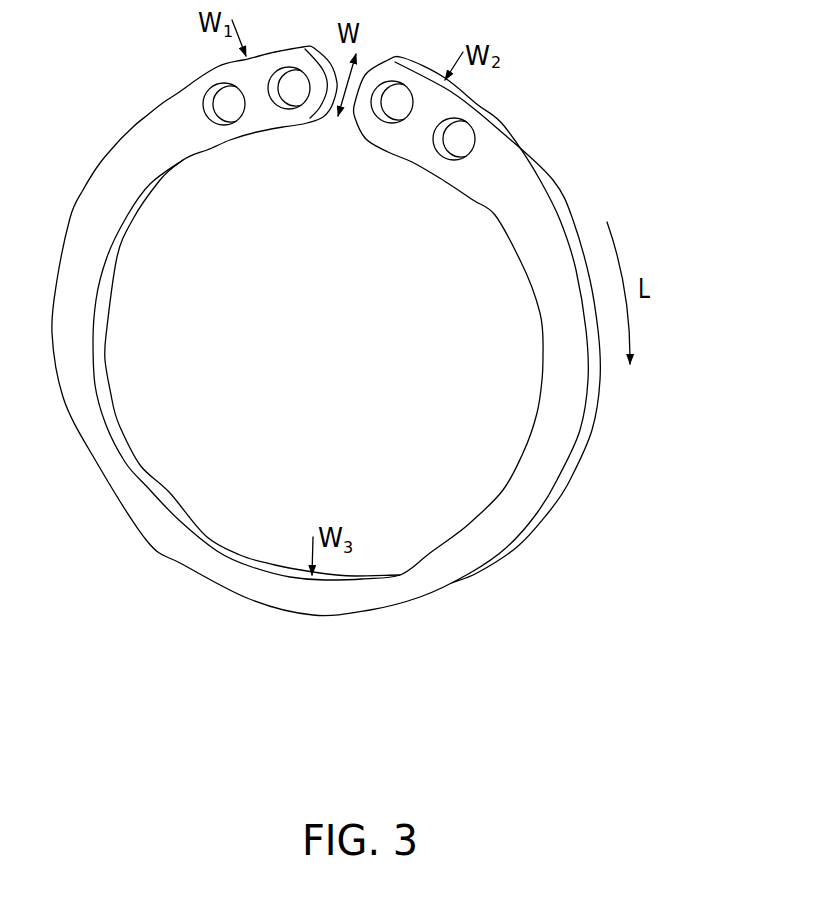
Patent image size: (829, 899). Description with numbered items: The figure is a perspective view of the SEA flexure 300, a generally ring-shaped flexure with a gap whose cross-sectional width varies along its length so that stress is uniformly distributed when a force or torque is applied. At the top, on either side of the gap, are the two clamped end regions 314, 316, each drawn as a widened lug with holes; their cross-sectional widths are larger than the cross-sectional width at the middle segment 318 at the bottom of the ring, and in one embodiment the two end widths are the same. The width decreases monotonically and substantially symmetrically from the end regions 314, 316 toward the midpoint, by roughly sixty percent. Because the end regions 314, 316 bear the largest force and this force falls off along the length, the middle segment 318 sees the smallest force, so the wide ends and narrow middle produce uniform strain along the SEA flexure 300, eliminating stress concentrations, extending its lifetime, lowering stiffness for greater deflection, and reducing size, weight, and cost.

The SEA flexure 300 is at (351, 362).
The end region 314 is at (253, 113).
The end region 316 is at (417, 137).
The middle segment 318 is at (308, 619).